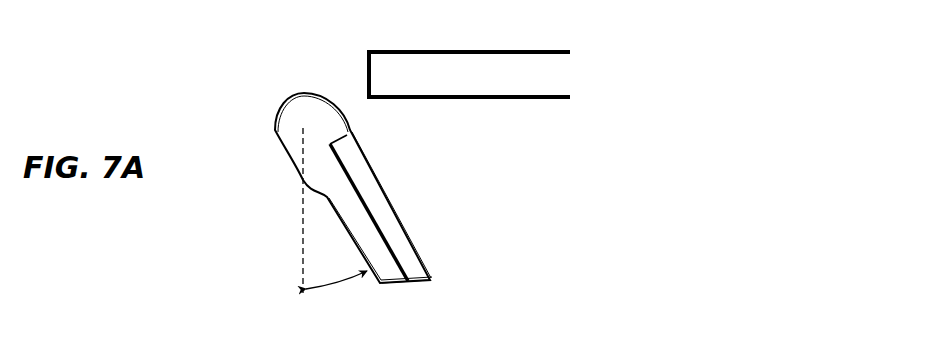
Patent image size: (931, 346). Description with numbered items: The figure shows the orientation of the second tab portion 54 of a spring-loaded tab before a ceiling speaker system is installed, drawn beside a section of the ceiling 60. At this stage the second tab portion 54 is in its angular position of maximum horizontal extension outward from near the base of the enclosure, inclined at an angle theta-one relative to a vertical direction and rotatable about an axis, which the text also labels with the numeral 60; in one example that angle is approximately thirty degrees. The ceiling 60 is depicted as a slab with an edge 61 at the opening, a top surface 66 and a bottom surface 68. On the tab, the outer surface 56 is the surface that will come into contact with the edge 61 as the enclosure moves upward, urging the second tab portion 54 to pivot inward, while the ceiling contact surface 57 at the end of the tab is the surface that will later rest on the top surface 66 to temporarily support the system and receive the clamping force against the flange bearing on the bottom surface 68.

The second tab portion 54 is at (270, 210).
The outer surface 56 is at (410, 230).
The ceiling contact surface 57 is at (408, 287).
The ceiling 60 is at (500, 90).
The edge 61 is at (366, 74).
The top surface 66 is at (488, 48).
The bottom surface 68 is at (487, 100).